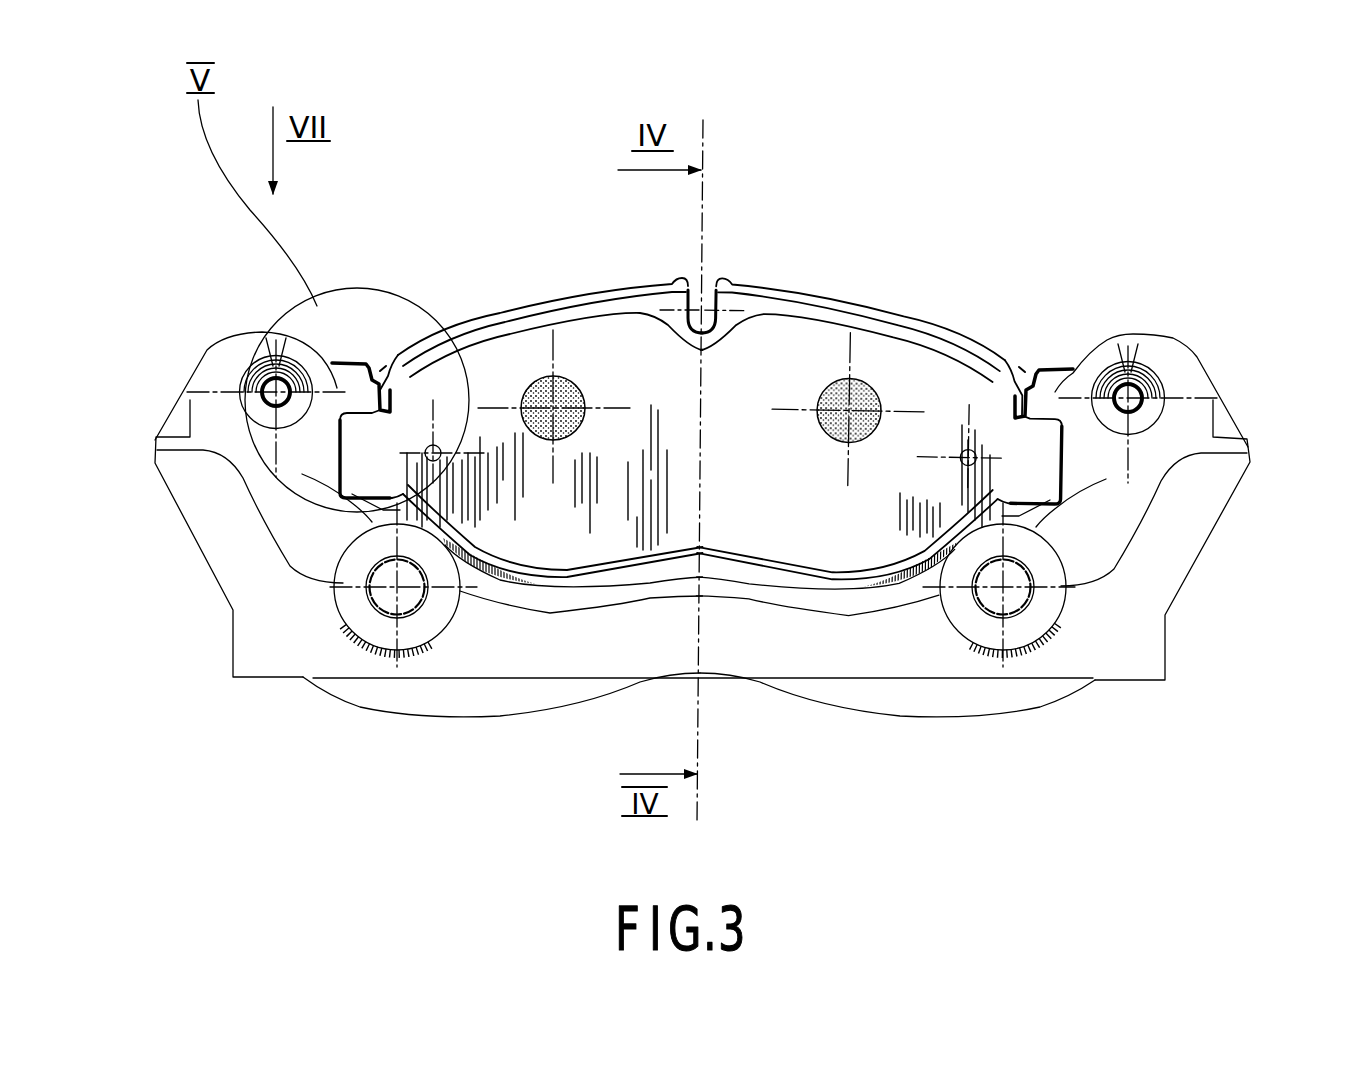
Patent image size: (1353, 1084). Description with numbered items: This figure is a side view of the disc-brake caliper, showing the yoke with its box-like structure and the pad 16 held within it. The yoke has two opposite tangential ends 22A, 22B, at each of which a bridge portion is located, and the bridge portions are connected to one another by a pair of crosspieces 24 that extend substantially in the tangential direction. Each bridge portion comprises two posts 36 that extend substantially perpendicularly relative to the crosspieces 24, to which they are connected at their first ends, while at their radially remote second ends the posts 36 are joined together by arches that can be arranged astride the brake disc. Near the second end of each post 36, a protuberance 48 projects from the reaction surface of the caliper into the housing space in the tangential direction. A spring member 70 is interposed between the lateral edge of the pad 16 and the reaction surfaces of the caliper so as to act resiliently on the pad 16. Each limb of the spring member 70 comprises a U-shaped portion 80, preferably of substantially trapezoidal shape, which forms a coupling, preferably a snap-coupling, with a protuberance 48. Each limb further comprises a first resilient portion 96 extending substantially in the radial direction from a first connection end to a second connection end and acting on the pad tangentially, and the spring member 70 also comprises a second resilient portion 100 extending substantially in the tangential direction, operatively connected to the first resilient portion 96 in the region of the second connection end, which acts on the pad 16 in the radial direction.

The pad 16 is at (527, 352).
The tangential end 22A is at (1110, 697).
The tangential end 22B is at (273, 695).
The crosspiece 24 is at (567, 650).
The post 36 is at (302, 474).
The protuberance 48 is at (277, 330).
The spring member 70 is at (358, 360).
The U-shaped portion 80 is at (384, 369).
The first resilient portion 96 is at (340, 440).
The second resilient portion 100 is at (365, 508).